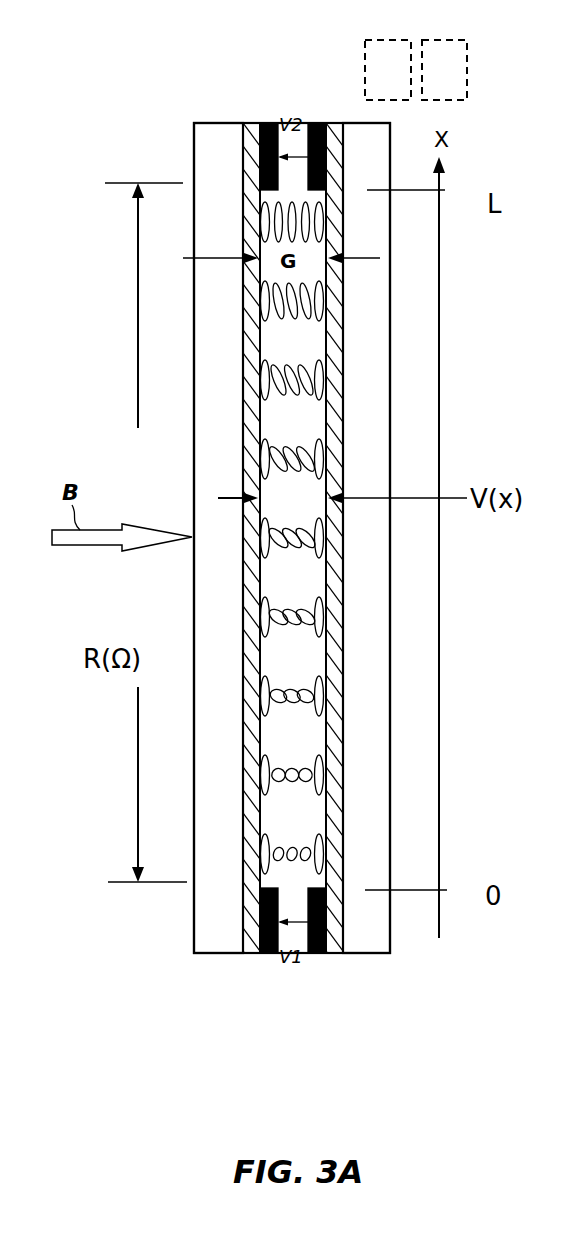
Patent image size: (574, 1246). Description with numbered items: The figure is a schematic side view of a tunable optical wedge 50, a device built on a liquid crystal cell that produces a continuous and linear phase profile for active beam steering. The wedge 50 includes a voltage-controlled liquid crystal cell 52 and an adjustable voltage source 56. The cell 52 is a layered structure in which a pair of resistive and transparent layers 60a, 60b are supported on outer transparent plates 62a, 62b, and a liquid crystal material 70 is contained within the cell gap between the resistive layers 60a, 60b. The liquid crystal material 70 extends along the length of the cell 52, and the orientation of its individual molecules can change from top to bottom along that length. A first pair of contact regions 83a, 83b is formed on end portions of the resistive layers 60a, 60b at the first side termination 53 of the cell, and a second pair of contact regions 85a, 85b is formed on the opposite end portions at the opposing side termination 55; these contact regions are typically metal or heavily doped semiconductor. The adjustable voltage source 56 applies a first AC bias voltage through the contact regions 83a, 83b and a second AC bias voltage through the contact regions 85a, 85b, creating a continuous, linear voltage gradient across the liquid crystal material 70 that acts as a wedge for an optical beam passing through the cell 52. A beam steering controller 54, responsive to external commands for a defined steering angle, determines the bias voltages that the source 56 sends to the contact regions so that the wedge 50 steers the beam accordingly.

The tunable optical wedge 50 is at (148, 968).
The voltage-controlled liquid crystal cell 52 is at (194, 140).
The first side termination 53 is at (292, 1014).
The beam steering controller 54 is at (444, 70).
The opposing side termination 55 is at (292, 65).
The adjustable voltage source 56 is at (388, 70).
The first resistive and transparent layer 60a is at (252, 955).
The second resistive and transparent layer 60b is at (335, 955).
The first transparent plate 62a is at (205, 955).
The second transparent plate 62b is at (380, 955).
The liquid crystal material 70 is at (284, 419).
The first contact region 83a is at (272, 955).
The first contact region 83b is at (316, 955).
The second contact region 85a is at (268, 123).
The second contact region 85b is at (312, 123).